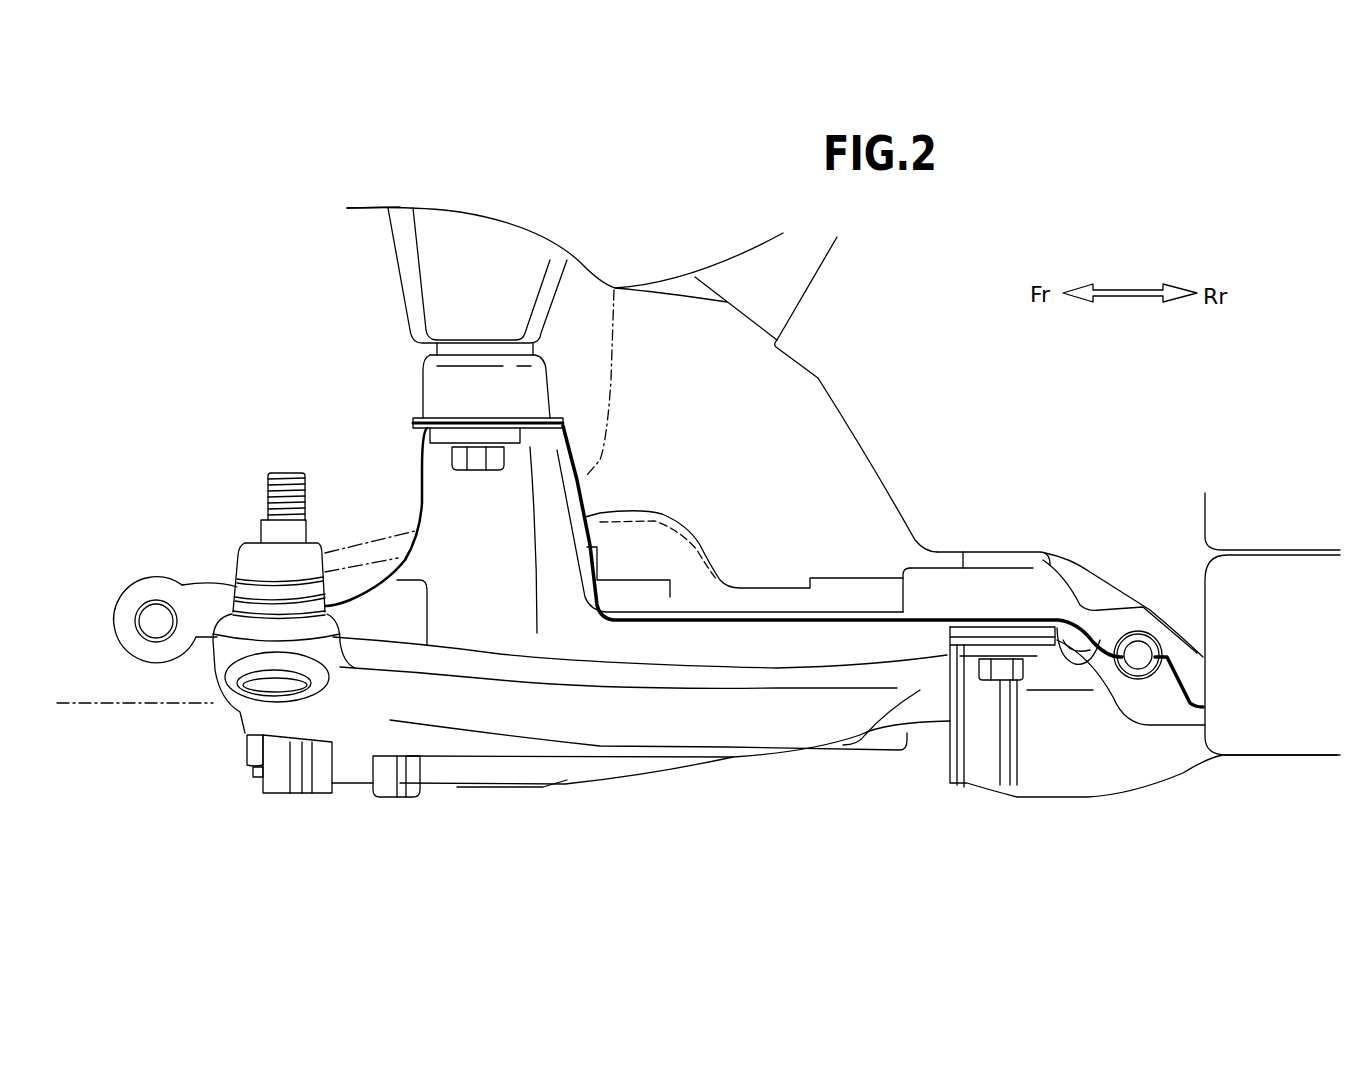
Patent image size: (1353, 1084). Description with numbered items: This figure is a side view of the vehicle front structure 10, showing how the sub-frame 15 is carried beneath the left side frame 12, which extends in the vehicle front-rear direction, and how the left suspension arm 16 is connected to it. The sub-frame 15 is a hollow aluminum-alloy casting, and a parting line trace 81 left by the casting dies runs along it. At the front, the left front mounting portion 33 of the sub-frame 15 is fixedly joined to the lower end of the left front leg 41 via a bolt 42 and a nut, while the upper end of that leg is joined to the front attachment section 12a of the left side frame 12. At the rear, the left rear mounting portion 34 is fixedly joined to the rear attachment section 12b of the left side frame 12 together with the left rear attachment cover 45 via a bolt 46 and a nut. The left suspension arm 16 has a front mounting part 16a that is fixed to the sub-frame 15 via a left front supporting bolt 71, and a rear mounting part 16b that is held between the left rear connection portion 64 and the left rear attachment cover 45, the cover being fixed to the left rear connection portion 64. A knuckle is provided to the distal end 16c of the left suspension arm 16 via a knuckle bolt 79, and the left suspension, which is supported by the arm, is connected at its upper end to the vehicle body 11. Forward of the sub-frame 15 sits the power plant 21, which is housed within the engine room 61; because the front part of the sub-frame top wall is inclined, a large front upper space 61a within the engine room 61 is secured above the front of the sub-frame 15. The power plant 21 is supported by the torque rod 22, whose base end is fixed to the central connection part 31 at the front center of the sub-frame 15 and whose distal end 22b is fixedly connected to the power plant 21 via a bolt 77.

The vehicle front structure 10 is at (297, 250).
The vehicle body 11 is at (572, 187).
The left side frame 12 is at (648, 252).
The front attachment section 12a is at (462, 186).
The rear attachment section 12b is at (987, 537).
The sub-frame 15 is at (415, 477).
The left suspension arm 16 is at (597, 737).
The front mounting part 16a is at (350, 780).
The rear mounting part 16b is at (942, 717).
The distal end 16c is at (223, 648).
The power plant 21 is at (610, 387).
The torque rod 22 is at (225, 587).
The distal end 22b is at (150, 587).
The central connection part 31 is at (657, 527).
The left front mounting portion 33 is at (530, 392).
The left rear mounting portion 34 is at (1010, 593).
The left front leg 41 is at (441, 259).
The bolt 42 is at (480, 463).
The left rear attachment cover 45 is at (1080, 767).
The bolt 46 is at (1000, 677).
The engine room 61 is at (263, 343).
The front upper space 61a is at (388, 495).
The left rear connection portion 64 is at (1077, 637).
The left front supporting bolt 71 is at (247, 747).
The bolt 77 is at (137, 623).
The knuckle bolt 79 is at (267, 487).
The parting line trace 81 is at (773, 610).